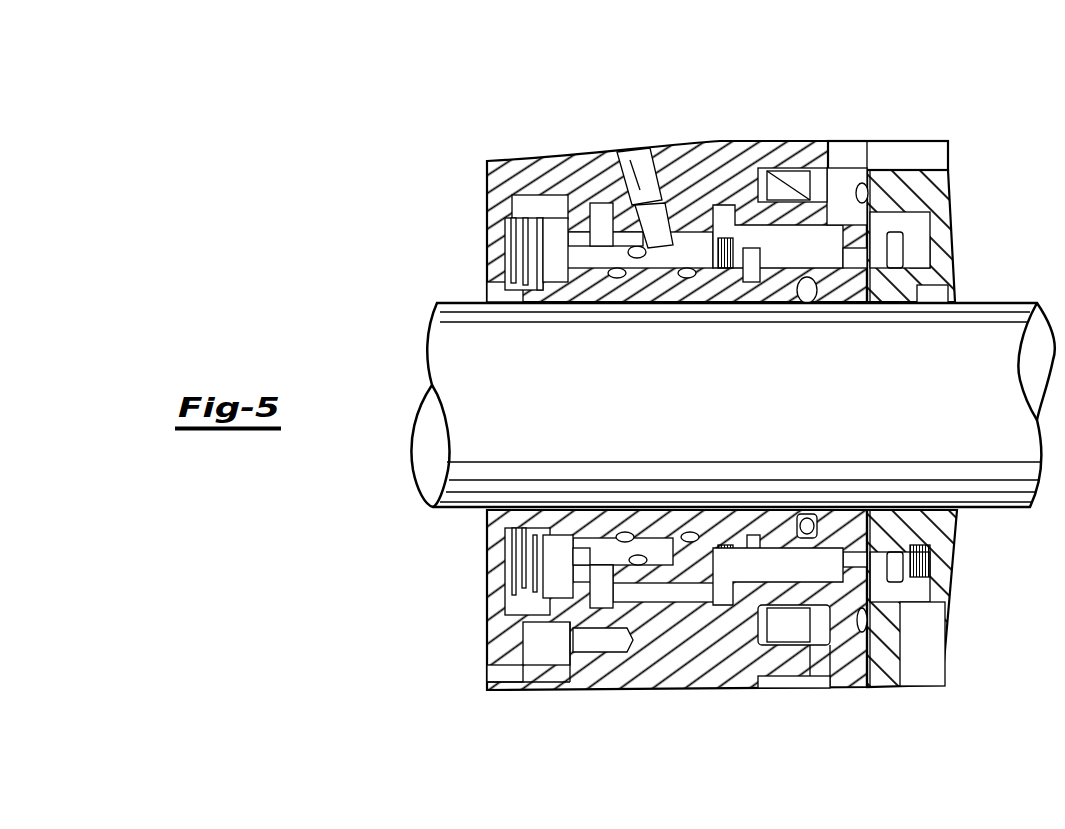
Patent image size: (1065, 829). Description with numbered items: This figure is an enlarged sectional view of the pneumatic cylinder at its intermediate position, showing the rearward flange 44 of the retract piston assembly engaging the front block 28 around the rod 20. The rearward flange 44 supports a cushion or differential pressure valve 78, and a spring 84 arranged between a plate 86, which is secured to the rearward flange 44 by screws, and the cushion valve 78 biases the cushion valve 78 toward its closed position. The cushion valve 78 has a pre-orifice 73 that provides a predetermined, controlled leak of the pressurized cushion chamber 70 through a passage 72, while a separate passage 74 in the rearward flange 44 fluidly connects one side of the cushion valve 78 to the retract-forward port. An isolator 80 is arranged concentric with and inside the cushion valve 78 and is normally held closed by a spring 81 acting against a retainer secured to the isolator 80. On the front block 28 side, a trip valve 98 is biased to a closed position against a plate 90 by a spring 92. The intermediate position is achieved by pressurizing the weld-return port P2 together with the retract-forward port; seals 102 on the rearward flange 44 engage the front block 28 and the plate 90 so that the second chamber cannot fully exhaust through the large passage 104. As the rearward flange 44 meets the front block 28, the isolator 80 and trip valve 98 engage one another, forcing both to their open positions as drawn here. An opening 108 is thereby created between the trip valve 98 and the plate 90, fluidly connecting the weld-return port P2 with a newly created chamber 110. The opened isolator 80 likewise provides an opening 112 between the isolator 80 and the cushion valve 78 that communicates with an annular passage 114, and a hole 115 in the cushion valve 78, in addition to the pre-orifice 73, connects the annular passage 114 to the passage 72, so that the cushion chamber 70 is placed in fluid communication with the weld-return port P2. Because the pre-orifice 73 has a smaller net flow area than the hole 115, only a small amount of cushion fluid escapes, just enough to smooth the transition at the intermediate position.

The rod 20 is at (717, 376).
The front block 28 is at (930, 190).
The rearward flange 44 is at (702, 150).
The cushion chamber 70 is at (468, 283).
The passage 72 is at (605, 595).
The pre-orifice 73 is at (538, 582).
The passage 74 is at (626, 168).
The cushion valve 78 is at (562, 228).
The isolator 80 is at (552, 518).
The spring 81 is at (689, 531).
The spring 84 is at (536, 247).
The plate 86 is at (492, 525).
The plate 90 is at (858, 684).
The spring 92 is at (928, 250).
The trip valve 98 is at (893, 270).
The seals 102 is at (758, 630).
The large passage 104 is at (850, 150).
The opening 108 is at (853, 258).
The chamber 110 is at (792, 572).
The opening 112 is at (493, 232).
The annular passage 114 is at (568, 533).
The hole 115 is at (584, 553).
The weld-return port P2 is at (927, 622).